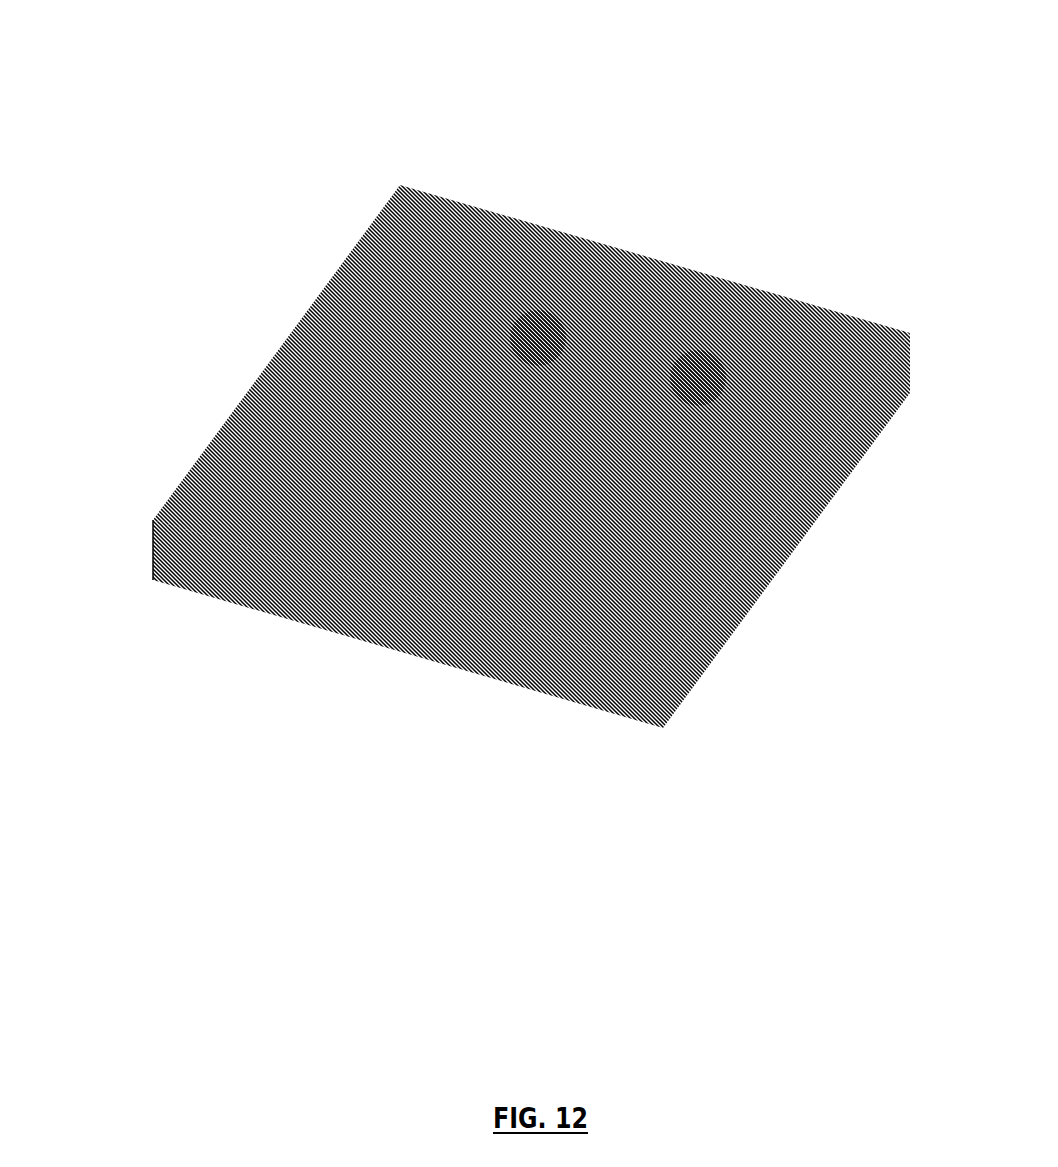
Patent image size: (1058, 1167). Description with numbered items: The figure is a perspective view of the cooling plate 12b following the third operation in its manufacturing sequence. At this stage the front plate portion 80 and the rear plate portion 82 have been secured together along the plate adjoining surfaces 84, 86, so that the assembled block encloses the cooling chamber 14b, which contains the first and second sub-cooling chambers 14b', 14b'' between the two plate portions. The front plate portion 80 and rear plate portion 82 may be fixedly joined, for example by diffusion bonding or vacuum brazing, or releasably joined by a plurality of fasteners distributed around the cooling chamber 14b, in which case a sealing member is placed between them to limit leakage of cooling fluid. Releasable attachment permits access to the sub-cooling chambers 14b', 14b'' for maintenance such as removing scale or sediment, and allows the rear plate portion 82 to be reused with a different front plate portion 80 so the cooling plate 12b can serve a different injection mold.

The cooling plate 12b is at (375, 105).
The cooling chamber 14b is at (531, 396).
The first sub-cooling chamber 14b' is at (689, 298).
The second sub-cooling chamber 14b'' is at (580, 271).
The front plate portion 80 is at (148, 528).
The rear plate portion 82 is at (147, 553).
The plate adjoining surface 84 is at (595, 670).
The plate adjoining surface 86 is at (559, 652).